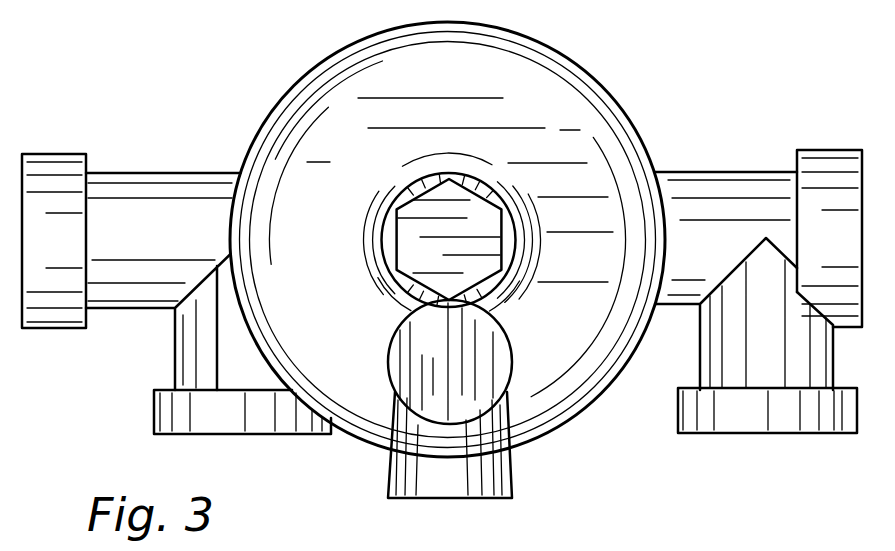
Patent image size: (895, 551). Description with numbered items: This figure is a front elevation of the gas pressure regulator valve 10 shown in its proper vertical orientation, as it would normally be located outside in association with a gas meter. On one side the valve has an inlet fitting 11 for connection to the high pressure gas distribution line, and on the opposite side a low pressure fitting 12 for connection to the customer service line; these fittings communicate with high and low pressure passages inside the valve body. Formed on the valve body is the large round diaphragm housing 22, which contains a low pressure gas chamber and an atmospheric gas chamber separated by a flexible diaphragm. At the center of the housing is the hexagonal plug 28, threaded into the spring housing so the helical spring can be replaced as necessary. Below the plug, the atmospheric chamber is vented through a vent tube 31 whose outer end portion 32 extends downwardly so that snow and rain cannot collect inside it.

The valve assembly 10 is at (760, 77).
The inlet fitting 11 is at (260, 434).
The low pressure fitting 12 is at (760, 433).
The diaphragm housing 22 is at (565, 92).
The plug 28 is at (433, 220).
The vent tube 31 is at (472, 368).
The outer end portion 32 is at (440, 498).